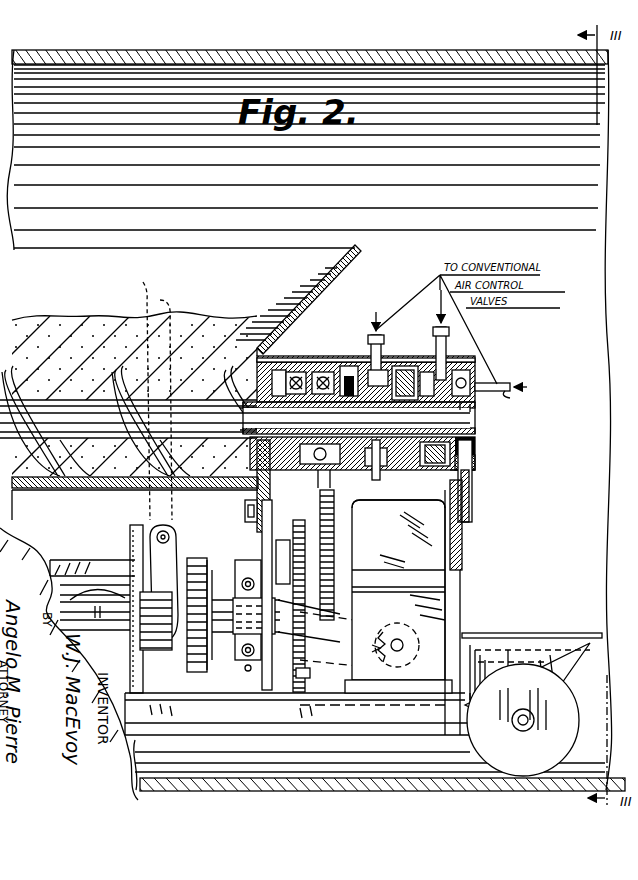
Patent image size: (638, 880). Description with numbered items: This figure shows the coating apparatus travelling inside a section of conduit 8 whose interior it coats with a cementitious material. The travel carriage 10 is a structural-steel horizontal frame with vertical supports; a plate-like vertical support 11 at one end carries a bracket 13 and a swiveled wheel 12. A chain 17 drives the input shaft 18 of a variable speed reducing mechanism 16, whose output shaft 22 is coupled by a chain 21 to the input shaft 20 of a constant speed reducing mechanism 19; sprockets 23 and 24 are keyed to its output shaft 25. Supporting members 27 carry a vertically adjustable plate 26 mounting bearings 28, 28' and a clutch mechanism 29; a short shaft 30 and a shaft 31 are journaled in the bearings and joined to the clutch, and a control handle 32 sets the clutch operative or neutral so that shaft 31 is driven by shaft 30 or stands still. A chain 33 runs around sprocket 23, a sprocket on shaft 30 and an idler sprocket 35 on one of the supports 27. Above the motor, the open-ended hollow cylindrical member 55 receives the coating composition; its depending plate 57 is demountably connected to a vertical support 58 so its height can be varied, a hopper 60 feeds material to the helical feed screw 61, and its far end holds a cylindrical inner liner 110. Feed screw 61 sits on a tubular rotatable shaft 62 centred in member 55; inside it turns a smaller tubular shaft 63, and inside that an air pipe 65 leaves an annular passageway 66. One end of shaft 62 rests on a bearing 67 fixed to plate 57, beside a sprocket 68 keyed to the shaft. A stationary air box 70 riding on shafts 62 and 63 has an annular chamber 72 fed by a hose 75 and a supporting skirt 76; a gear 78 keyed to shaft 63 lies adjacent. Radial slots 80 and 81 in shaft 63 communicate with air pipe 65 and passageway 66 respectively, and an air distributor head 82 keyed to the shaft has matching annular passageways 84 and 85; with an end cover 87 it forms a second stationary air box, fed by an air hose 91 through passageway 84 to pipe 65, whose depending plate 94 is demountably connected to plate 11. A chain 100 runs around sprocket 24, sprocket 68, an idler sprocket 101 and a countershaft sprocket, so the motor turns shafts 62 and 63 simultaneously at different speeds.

The conduit 8 is at (340, 57).
The travel carriage 10 is at (251, 744).
The vertical support 11 is at (461, 584).
The swiveled wheel 12 is at (478, 748).
The bracket 13 is at (492, 640).
The variable speed reducing mechanism 16 is at (75, 565).
The chain 17 is at (55, 562).
The input shaft 18 is at (108, 600).
The constant speed reducing mechanism 19 is at (463, 539).
The input shaft 20 is at (410, 634).
The chain 21 is at (404, 640).
The output shaft 22 is at (186, 666).
The sprocket 23 is at (306, 555).
The sprocket 24 is at (350, 566).
The output shaft 25 is at (298, 585).
The vertically adjustable plate 26 is at (246, 688).
The supporting members 27 is at (232, 702).
The bearings 28 is at (240, 612).
The pinion 28' is at (139, 621).
The clutch mechanism 29 is at (180, 560).
The short shaft 30 is at (310, 624).
The shaft 31 is at (100, 616).
The control handle 32 is at (149, 392).
The chain 33 is at (300, 552).
The idler sprocket 35 is at (310, 674).
The hollow cylindrical member 55 is at (138, 493).
The plate 57 is at (272, 490).
The vertical support 58 is at (265, 706).
The hopper 60 is at (340, 250).
The helical feed screw 61 is at (185, 385).
The tubular rotatable shaft 62 is at (77, 405).
The rotatable tubular shaft 63 is at (240, 416).
The air pipe 65 is at (472, 417).
The passageway 66 is at (466, 380).
The bearing 67 is at (284, 370).
The sprocket 68 is at (312, 372).
The stationary air box 70 is at (366, 368).
The annular chamber 72 is at (405, 366).
The hose 75 is at (380, 348).
The supporting skirt 76 is at (360, 478).
The gear 78 is at (424, 372).
The radial slot 80 is at (470, 408).
The radial slot 81 is at (480, 386).
The air distributor head 82 is at (476, 445).
The annular passageway 84 is at (476, 462).
The annular passageway 85 is at (436, 467).
The end cover 87 is at (476, 470).
The air hose 91 is at (515, 399).
The depending plate 94 is at (470, 480).
The chain 100 is at (330, 486).
The idler sprocket 101 is at (356, 523).
The cylindrical inner liner 110 is at (18, 492).